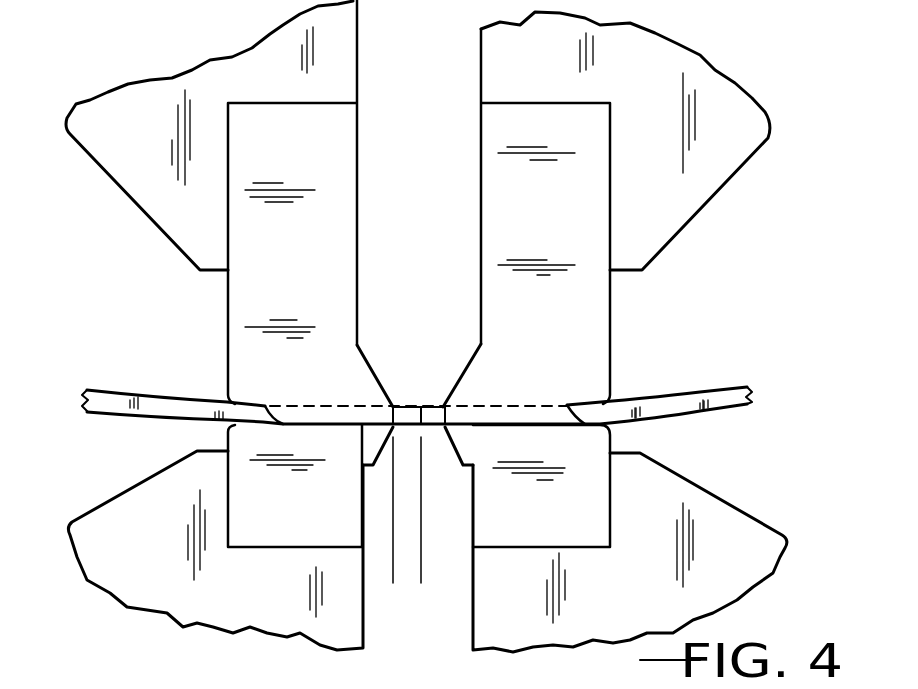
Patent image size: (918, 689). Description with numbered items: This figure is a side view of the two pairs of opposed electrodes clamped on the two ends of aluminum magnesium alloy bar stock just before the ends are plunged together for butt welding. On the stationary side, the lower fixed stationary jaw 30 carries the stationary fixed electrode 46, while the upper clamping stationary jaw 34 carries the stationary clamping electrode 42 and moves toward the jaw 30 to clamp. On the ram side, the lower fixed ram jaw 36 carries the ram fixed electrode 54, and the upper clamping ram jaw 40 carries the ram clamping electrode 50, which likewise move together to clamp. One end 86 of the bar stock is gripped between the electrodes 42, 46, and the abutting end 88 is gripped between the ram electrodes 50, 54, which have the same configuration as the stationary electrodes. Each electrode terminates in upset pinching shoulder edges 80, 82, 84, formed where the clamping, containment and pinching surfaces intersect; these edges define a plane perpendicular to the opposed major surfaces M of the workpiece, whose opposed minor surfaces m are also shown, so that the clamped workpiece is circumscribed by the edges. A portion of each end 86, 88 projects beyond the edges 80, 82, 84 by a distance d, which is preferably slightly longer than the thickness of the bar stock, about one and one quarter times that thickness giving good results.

The lower fixed stationary jaw 30 is at (243, 605).
The upper clamping stationary jaw 34 is at (268, 88).
The lower fixed ram jaw 36 is at (608, 598).
The upper clamping ram jaw 40 is at (627, 152).
The stationary clamping electrode 42 is at (310, 290).
The stationary fixed electrode 46 is at (295, 525).
The ram clamping electrode 50 is at (570, 235).
The ram fixed electrode 54 is at (515, 527).
The upset pinching shoulder edge 80 is at (394, 406).
The upset pinching shoulder edge 82 is at (385, 432).
The upset pinching shoulder edge 84 is at (393, 427).
The end of bar stock 86 is at (412, 406).
The end of bar stock 88 is at (433, 406).
The distance d is at (450, 572).
The major surface M is at (625, 400).
The minor surface m is at (672, 410).